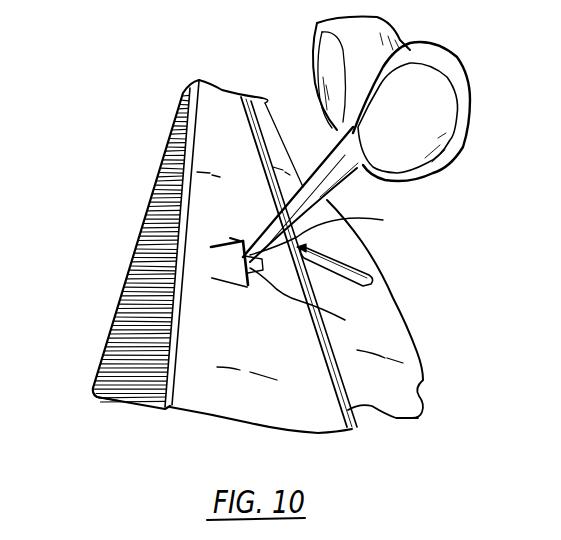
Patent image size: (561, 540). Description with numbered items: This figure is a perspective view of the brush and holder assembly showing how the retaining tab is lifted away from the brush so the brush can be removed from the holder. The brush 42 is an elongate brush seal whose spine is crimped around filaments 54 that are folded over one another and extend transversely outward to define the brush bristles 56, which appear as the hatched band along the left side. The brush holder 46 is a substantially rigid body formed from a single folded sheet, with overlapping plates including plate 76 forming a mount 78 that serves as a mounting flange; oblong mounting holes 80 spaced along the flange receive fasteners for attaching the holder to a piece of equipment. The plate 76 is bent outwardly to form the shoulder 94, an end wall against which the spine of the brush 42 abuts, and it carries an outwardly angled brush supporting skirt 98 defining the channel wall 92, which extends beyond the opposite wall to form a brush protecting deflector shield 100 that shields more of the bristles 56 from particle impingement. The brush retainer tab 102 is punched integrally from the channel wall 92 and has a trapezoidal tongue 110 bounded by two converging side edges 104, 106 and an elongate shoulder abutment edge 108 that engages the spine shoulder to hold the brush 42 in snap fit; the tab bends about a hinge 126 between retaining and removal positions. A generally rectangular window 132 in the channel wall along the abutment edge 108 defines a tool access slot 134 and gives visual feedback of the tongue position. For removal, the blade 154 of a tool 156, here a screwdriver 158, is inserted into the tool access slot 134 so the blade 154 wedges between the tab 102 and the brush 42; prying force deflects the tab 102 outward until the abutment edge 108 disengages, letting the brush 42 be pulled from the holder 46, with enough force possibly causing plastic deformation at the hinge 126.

The brush 42 is at (124, 412).
The brush holder 46 is at (368, 442).
The filaments 54 is at (175, 140).
The brush bristles 56 is at (115, 347).
The plate 76 is at (420, 393).
The mount 78 is at (445, 376).
The mounting holes 80 is at (376, 268).
The channel wall 92 is at (250, 413).
The shoulder 94 is at (403, 423).
The brush supporting skirt 98 is at (213, 90).
The brush protecting deflector shield 100 is at (192, 403).
The brush retainer tab 102 is at (160, 280).
The side edge 104 is at (222, 257).
The side edge 106 is at (240, 285).
The shoulder abutment edge 108 is at (243, 240).
The tab tongue 110 is at (211, 247).
The hinge 126 is at (205, 270).
The window 132 is at (357, 287).
The tool access slot 134 is at (383, 220).
The blade 154 is at (323, 312).
The tool 156 is at (362, 188).
The screwdriver 158 is at (316, 148).